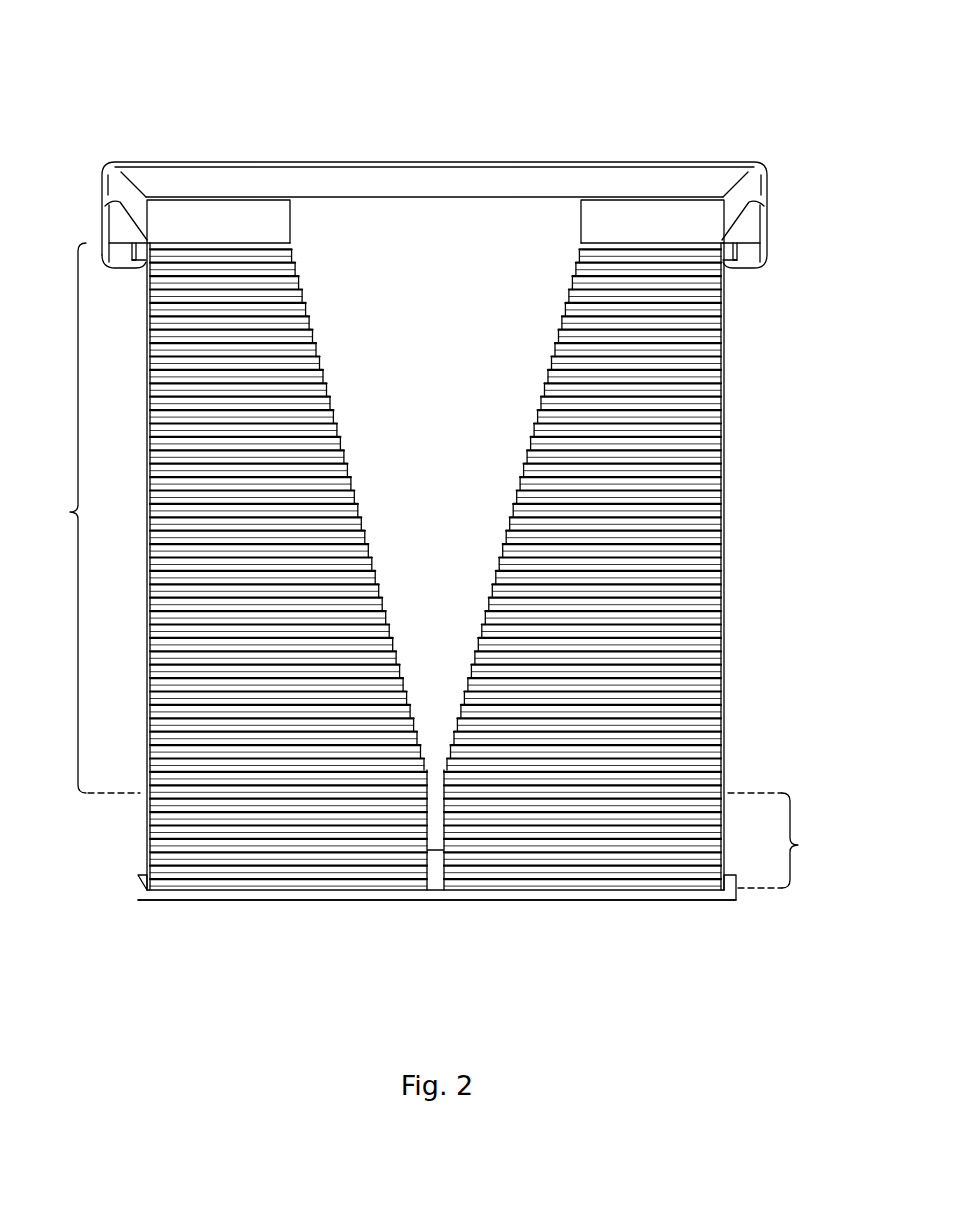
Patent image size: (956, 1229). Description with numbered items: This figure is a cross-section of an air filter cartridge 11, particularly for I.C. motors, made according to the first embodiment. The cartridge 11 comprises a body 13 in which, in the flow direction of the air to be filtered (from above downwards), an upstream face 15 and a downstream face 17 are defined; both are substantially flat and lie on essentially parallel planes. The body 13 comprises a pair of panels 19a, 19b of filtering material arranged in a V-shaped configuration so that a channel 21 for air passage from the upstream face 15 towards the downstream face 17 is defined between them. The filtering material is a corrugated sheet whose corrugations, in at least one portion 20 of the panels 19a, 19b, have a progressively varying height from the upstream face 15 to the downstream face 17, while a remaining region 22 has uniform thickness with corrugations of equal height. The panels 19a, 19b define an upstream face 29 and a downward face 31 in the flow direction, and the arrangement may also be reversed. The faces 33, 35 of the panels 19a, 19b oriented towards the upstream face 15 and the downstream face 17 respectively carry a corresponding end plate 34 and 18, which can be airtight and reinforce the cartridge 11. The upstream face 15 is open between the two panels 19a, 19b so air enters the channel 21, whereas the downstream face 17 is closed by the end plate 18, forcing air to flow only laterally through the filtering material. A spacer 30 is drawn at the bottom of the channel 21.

The air filter cartridge 11 is at (148, 947).
The body 13 is at (744, 340).
The upstream face 15 is at (580, 152).
The downstream face 17 is at (330, 910).
The end plate 18 is at (498, 900).
The panel of filtering material 19a is at (331, 309).
The panel of filtering material 19b is at (554, 265).
The portion of the panels 20 is at (86, 518).
The channel 21 is at (418, 613).
The remaining region 22 is at (785, 840).
The upstream face of the panels 29 is at (337, 408).
The spacer 30 is at (435, 890).
The downward face of the panels 31 is at (725, 458).
The face of the panels 33 is at (190, 214).
The end plate 34 is at (250, 215).
The face of the panels 35 is at (228, 890).